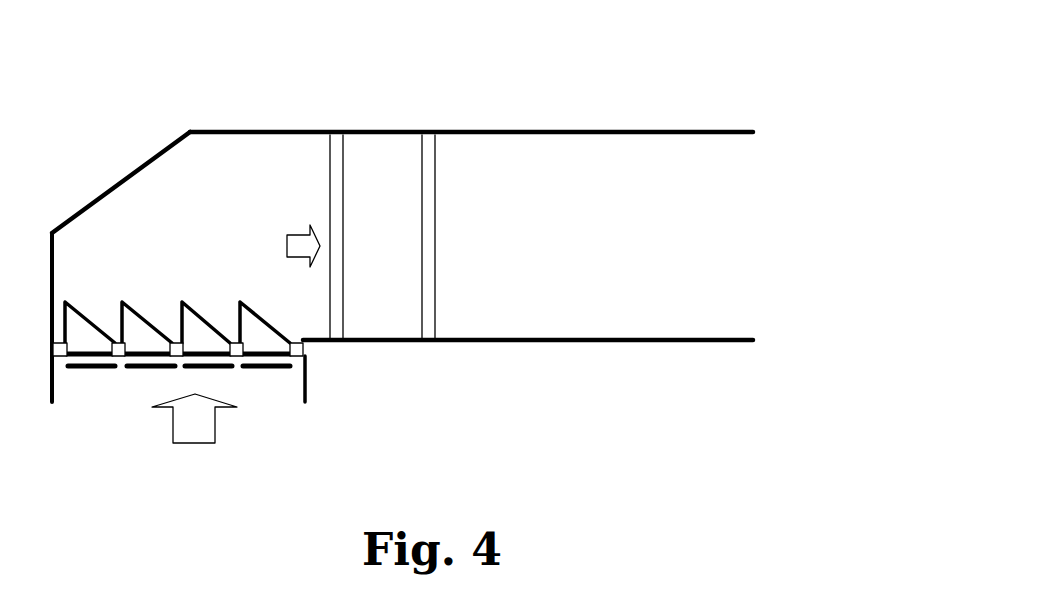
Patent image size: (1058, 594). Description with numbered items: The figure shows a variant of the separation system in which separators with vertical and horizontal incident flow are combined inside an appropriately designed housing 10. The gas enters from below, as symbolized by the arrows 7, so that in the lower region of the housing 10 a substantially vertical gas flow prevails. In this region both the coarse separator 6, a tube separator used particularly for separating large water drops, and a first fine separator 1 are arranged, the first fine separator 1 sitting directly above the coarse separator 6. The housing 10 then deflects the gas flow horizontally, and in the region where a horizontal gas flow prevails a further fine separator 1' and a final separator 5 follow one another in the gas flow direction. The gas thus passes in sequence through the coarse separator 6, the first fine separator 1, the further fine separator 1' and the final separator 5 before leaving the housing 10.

The housing 10 is at (702, 128).
The further fine separator 1' is at (364, 237).
The final separator 5 is at (437, 302).
The first fine separator 1 is at (281, 358).
The coarse separator 6 is at (262, 366).
The arrows 7 is at (198, 423).